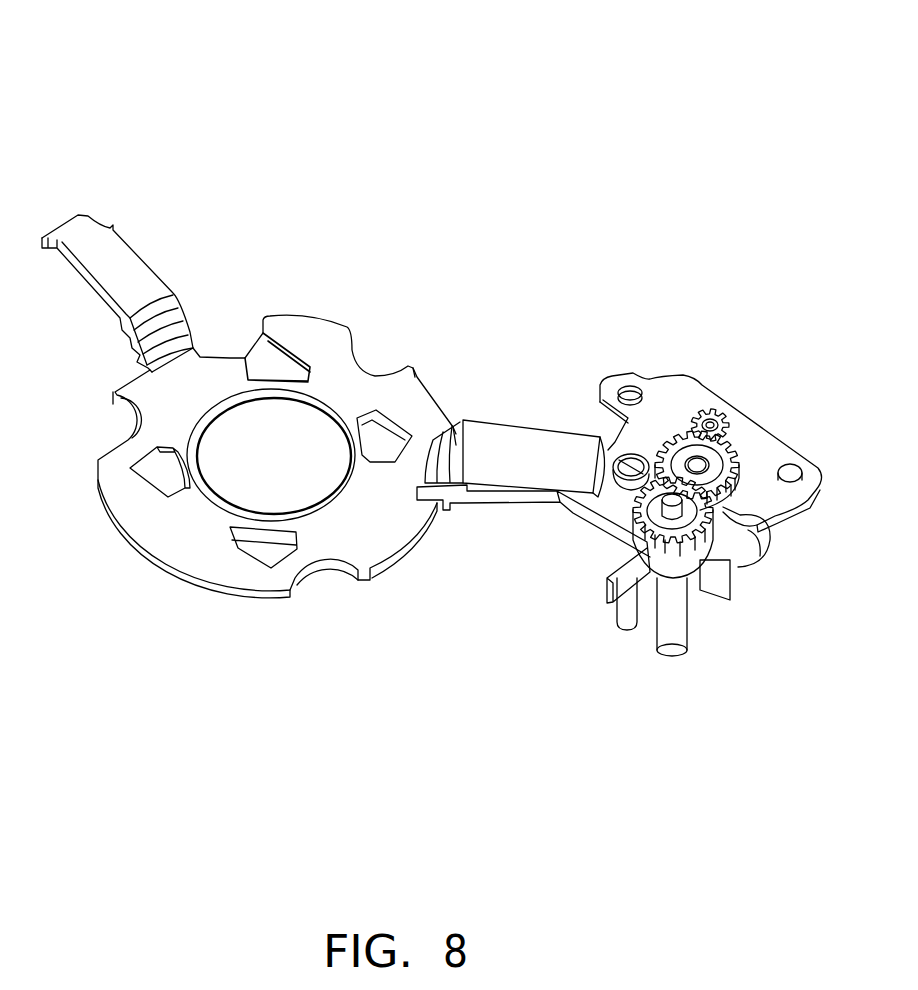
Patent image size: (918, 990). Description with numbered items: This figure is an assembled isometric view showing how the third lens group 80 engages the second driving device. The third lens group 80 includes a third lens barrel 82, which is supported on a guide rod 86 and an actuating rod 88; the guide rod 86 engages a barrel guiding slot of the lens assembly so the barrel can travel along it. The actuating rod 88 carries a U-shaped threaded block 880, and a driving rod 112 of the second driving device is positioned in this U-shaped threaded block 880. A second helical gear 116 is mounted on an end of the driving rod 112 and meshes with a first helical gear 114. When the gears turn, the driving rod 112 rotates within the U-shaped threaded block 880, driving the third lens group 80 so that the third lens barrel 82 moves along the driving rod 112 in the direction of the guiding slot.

The third lens group 80 is at (392, 92).
The third lens barrel 82 is at (320, 337).
The guide rod 86 is at (123, 268).
The actuating rod 88 is at (540, 445).
The U-shaped threaded block 880 is at (630, 513).
The driving rod 112 is at (670, 613).
The first helical gear 114 is at (737, 450).
The second helical gear 116 is at (723, 553).